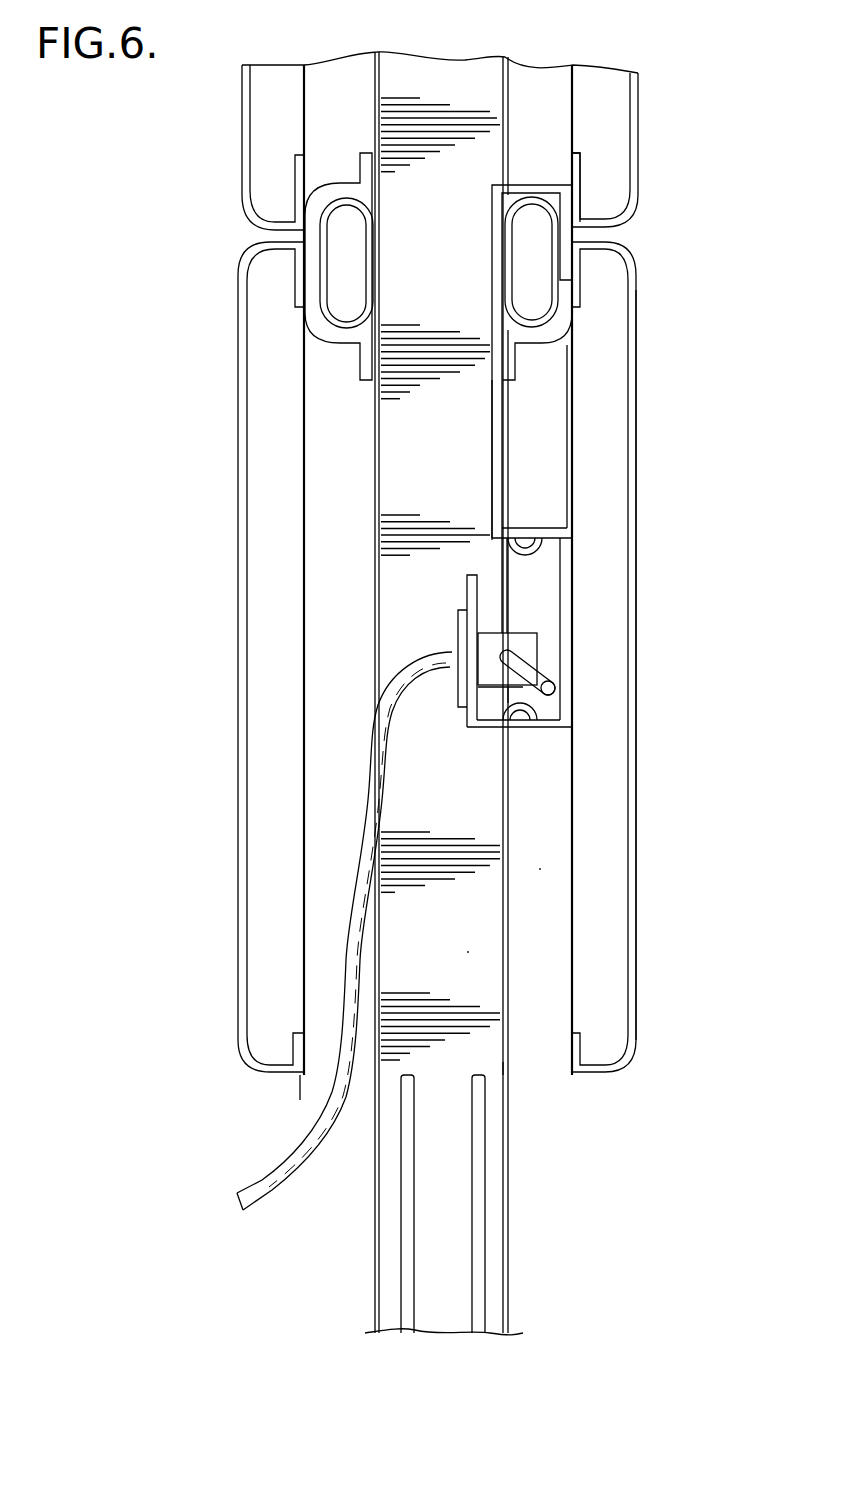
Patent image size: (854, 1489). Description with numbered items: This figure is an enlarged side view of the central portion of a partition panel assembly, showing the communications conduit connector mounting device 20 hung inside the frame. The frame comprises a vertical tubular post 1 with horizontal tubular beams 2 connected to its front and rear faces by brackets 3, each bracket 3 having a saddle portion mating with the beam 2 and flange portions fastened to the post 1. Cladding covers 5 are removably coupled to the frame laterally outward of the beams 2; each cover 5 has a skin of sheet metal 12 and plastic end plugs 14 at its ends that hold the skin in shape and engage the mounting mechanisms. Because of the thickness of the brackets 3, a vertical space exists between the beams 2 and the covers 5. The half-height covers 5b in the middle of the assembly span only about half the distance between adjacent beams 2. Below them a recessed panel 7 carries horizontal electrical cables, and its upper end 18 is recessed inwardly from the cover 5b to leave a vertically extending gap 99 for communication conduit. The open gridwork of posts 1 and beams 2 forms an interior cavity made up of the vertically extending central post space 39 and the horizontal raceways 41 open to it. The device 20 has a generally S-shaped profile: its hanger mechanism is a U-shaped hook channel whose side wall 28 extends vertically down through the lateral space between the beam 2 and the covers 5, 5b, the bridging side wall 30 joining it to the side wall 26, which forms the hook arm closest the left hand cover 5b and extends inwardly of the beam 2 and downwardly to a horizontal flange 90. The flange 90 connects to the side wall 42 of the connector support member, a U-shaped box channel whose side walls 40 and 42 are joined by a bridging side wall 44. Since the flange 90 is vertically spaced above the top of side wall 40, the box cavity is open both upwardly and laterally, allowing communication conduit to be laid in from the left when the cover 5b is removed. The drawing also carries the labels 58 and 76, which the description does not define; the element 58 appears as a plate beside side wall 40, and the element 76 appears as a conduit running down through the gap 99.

The post 1 is at (508, 90).
The beam 2 is at (550, 230).
The bracket 3 is at (345, 183).
The cladding cover 5 is at (222, 122).
The cover 5b is at (220, 350).
The recessed panel 7 is at (505, 1228).
The skin of sheet metal 12 is at (635, 872).
The end plug 14 is at (258, 548).
The upper end 18 is at (490, 1058).
The communications conduit connector mounting device 20 is at (522, 431).
The side wall 26 is at (493, 418).
The side wall 28 is at (568, 252).
The bridging side wall 30 is at (547, 185).
The central post space 39 is at (476, 960).
The side wall 40 is at (467, 580).
The raceway 41 is at (546, 877).
The side wall 42 is at (575, 610).
The bridging side wall 44 is at (513, 728).
The stop plate 58 is at (458, 625).
The cable 76 is at (255, 1180).
The horizontal flange 90 is at (540, 535).
The gap 99 is at (305, 1087).